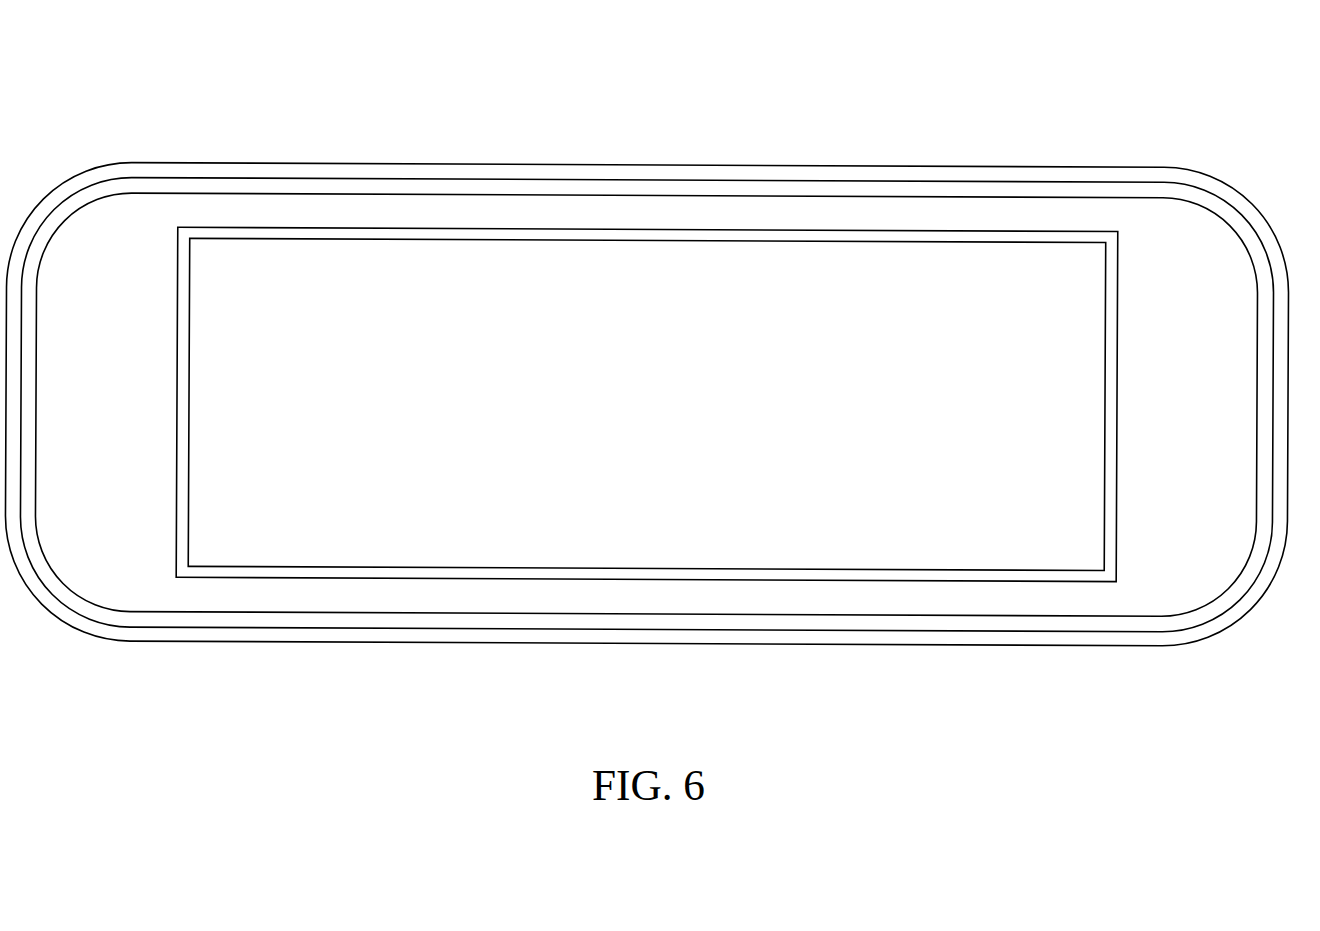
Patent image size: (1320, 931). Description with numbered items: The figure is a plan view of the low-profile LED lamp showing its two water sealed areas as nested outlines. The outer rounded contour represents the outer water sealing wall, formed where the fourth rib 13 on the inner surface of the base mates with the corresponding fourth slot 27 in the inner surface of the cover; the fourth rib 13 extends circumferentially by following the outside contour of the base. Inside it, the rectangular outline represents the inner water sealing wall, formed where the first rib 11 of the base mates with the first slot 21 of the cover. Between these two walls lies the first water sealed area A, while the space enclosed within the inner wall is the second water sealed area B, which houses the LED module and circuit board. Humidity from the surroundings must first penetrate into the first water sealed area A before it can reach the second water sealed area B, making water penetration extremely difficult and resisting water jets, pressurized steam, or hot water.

The first water sealed area A is at (120, 300).
The second water sealed area B is at (632, 345).
The fourth rib 13 is at (646, 444).
The fourth slot 27 is at (387, 618).
The first rib 11 is at (647, 461).
The first slot 21 is at (556, 572).